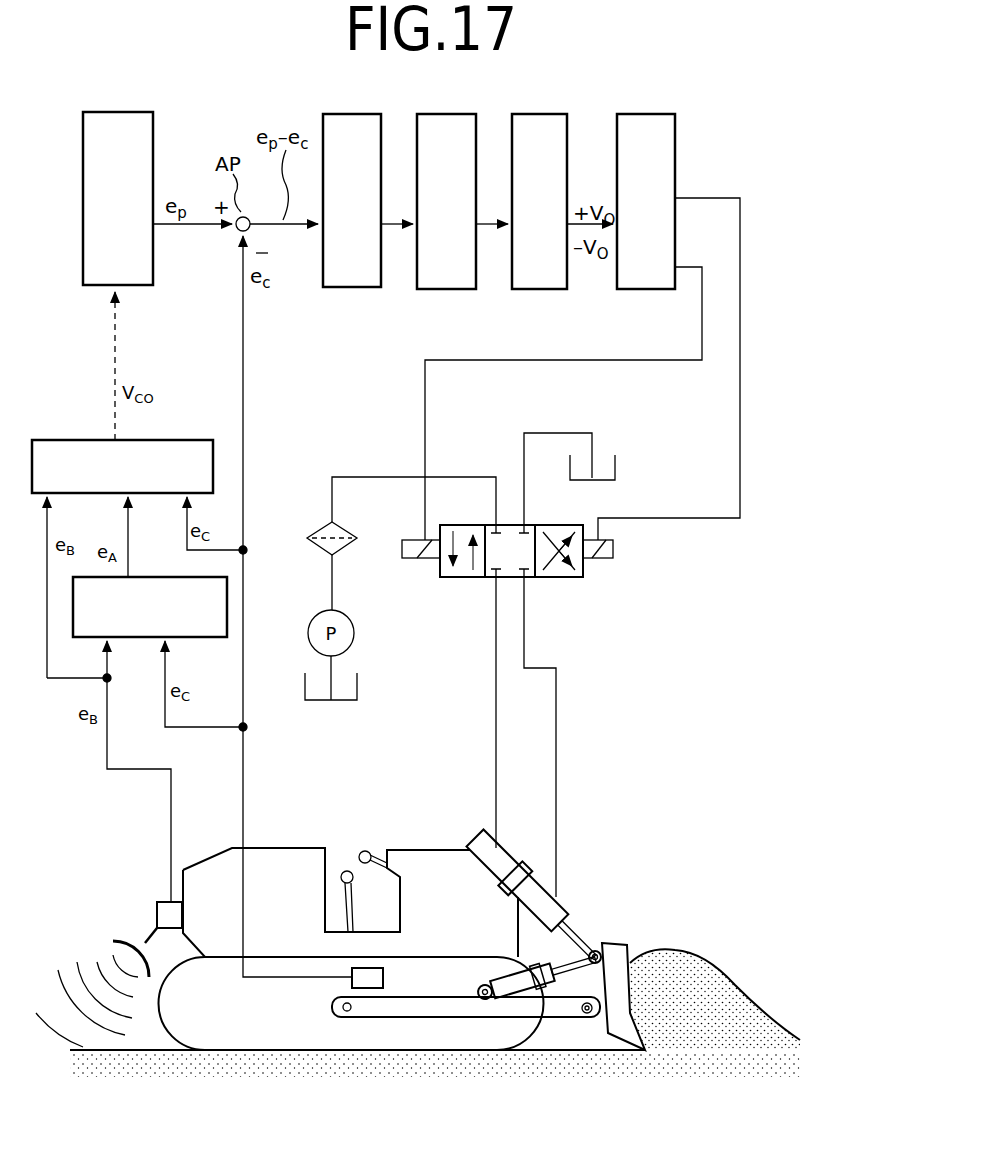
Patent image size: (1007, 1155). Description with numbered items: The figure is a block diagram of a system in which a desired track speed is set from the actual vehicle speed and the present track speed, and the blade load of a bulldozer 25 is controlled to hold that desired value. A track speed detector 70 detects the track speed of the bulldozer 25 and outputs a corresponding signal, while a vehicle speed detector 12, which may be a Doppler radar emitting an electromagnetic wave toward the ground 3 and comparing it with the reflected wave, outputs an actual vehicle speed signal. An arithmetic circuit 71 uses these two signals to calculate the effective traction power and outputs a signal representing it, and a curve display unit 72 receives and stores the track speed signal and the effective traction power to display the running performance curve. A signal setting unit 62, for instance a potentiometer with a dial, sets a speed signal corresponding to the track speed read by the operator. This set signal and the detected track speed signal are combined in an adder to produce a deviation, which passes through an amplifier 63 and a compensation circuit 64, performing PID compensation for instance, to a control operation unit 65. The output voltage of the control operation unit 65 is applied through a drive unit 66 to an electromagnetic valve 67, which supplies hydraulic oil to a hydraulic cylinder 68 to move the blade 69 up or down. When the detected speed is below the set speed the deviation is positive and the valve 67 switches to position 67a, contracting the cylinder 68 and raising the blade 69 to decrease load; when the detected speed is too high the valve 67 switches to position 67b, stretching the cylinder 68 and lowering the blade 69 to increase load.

The signal setting unit 62 is at (153, 127).
The amplifier 63 is at (364, 114).
The compensation circuit 64 is at (453, 114).
The control operation unit 65 is at (558, 114).
The drive unit 66 is at (675, 114).
The electromagnetic valve 67 is at (532, 582).
The valve position 67a is at (563, 578).
The valve position 67b is at (462, 578).
The hydraulic cylinder 68 is at (565, 907).
The blade 69 is at (614, 950).
The track speed detector 70 is at (383, 978).
The arithmetic circuit 71 is at (227, 628).
The curve display unit 72 is at (185, 440).
The bulldozer 25 is at (359, 909).
The vehicle speed detector 12 is at (123, 940).
The ground surface 3 is at (188, 1033).